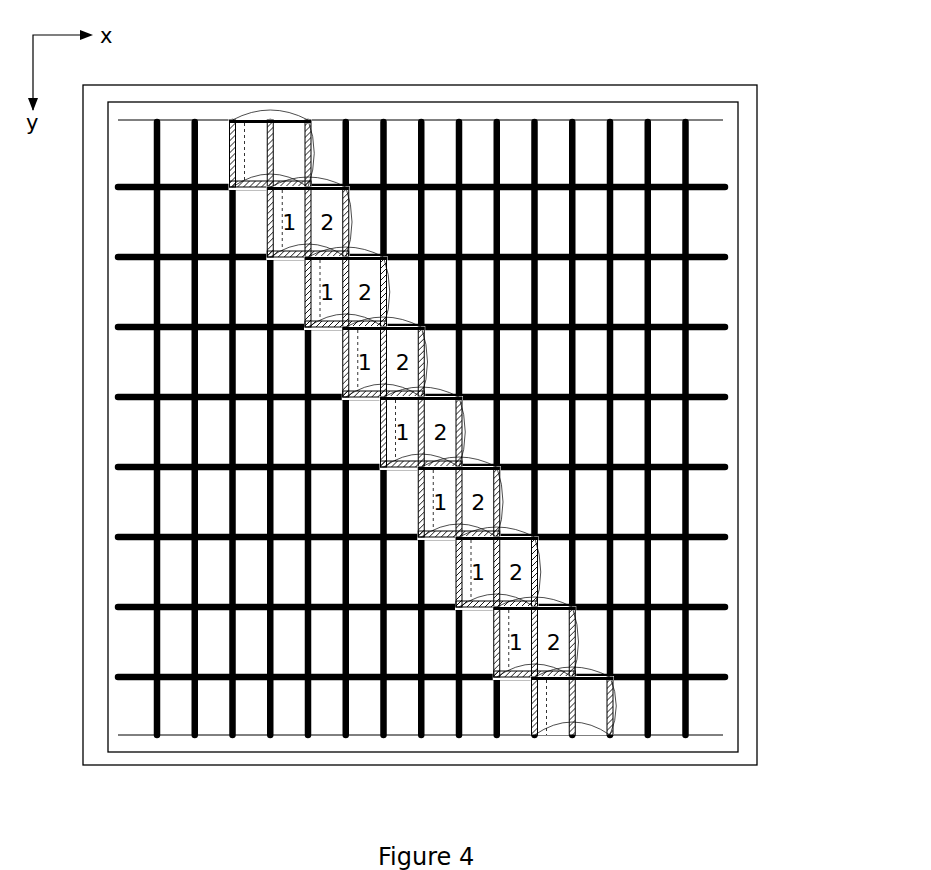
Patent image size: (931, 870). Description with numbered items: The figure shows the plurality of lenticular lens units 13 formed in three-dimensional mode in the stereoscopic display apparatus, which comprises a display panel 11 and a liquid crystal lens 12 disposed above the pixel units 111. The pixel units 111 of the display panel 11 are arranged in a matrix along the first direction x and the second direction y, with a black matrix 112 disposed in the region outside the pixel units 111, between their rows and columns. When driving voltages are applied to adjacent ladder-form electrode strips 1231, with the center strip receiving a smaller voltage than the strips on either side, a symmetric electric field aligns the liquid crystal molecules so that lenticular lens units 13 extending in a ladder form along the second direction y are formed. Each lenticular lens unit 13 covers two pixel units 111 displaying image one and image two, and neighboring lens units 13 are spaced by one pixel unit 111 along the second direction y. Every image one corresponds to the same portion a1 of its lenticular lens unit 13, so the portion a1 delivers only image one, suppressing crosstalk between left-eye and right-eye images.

The display panel 11 is at (550, 85).
The pixel unit 111 is at (623, 155).
The black matrix 112 is at (688, 133).
The liquid crystal lens 12 is at (478, 102).
The lenticular lens unit 13 is at (386, 379).
The electrode strip 1231 is at (271, 105).
The portion of the lenticular lens unit a1 is at (207, 107).